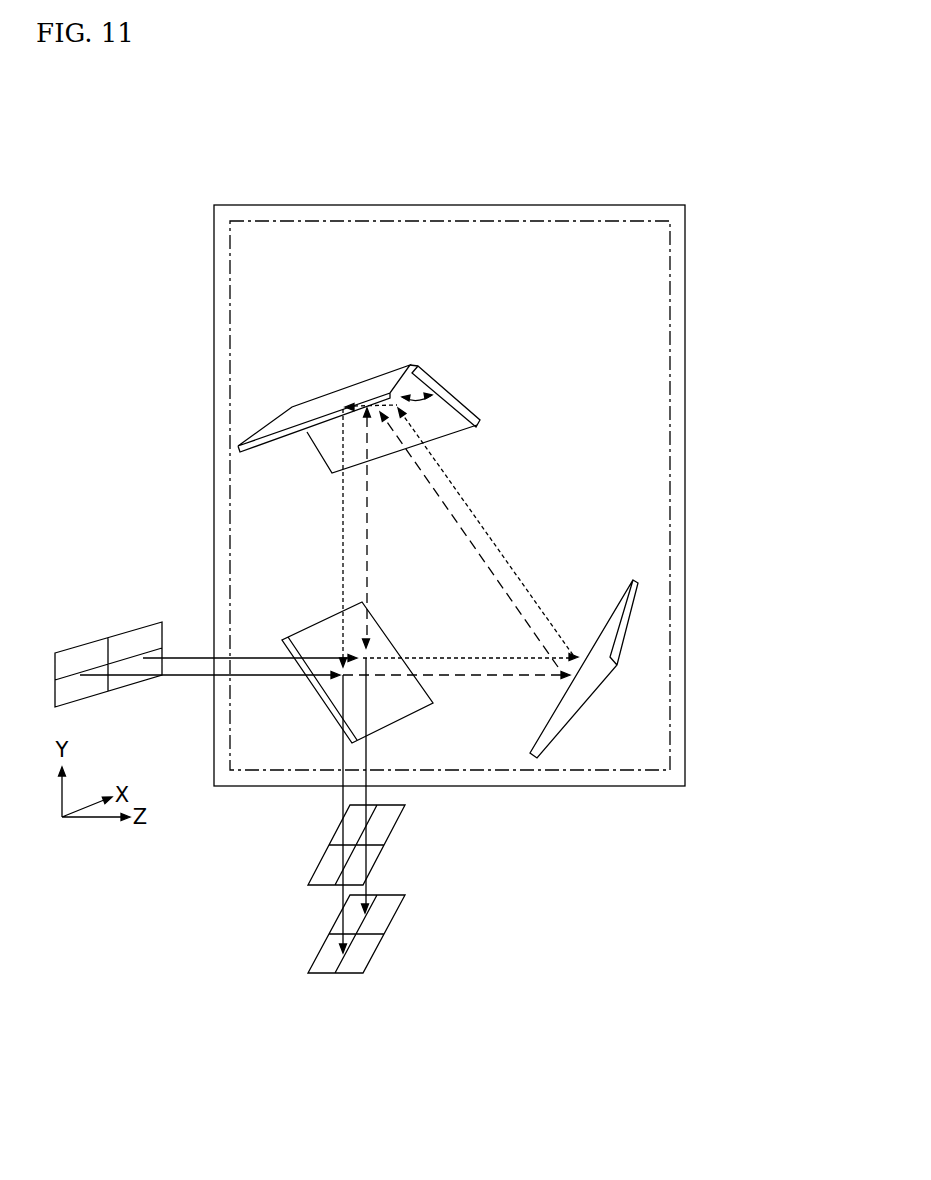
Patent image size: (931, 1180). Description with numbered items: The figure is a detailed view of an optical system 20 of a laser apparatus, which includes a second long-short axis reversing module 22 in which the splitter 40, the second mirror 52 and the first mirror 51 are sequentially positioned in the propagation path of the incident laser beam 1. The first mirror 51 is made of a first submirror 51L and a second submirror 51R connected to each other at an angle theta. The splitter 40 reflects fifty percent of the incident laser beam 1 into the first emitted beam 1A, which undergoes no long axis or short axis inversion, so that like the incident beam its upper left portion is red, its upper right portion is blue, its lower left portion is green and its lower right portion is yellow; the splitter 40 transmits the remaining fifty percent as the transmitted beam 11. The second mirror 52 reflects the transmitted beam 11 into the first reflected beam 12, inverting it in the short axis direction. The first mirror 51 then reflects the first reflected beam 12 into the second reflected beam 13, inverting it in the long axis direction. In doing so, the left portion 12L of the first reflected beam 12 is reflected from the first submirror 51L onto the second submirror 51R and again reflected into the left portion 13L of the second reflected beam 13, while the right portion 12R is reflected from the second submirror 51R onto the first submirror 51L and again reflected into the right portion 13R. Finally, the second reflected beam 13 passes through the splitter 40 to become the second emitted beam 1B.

The incident laser beam 1 is at (90, 642).
The first emitted beam 1A is at (308, 973).
The second emitted beam 1B is at (308, 885).
The transmitted beam 11 is at (472, 657).
The first reflected beam 12 is at (482, 537).
The right portion of the first reflected beam 12R is at (483, 527).
The left portion of the first reflected beam 12L is at (503, 577).
The second reflected beam 13 is at (303, 537).
The right portion of the second reflected beam 13R is at (367, 502).
The left portion of the second reflected beam 13L is at (343, 557).
The optical system 20 is at (524, 205).
The second long-short axis reversing module 22 is at (575, 221).
The splitter 40 is at (395, 713).
The first mirror 51 is at (359, 365).
The first submirror 51L is at (322, 400).
The second submirror 51R is at (428, 359).
The second mirror 52 is at (637, 594).